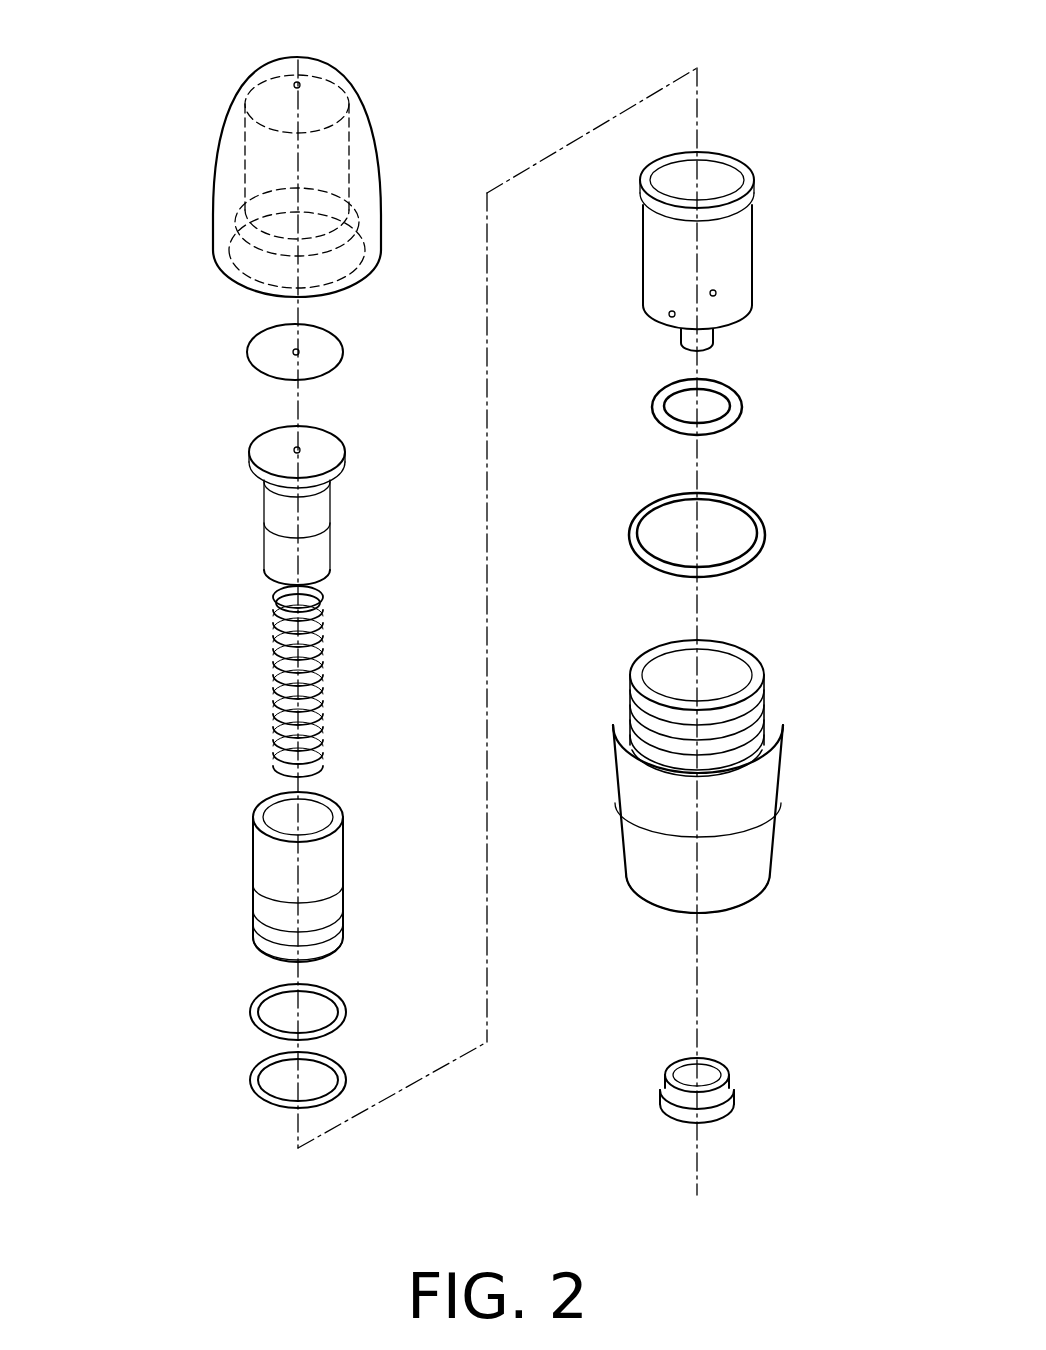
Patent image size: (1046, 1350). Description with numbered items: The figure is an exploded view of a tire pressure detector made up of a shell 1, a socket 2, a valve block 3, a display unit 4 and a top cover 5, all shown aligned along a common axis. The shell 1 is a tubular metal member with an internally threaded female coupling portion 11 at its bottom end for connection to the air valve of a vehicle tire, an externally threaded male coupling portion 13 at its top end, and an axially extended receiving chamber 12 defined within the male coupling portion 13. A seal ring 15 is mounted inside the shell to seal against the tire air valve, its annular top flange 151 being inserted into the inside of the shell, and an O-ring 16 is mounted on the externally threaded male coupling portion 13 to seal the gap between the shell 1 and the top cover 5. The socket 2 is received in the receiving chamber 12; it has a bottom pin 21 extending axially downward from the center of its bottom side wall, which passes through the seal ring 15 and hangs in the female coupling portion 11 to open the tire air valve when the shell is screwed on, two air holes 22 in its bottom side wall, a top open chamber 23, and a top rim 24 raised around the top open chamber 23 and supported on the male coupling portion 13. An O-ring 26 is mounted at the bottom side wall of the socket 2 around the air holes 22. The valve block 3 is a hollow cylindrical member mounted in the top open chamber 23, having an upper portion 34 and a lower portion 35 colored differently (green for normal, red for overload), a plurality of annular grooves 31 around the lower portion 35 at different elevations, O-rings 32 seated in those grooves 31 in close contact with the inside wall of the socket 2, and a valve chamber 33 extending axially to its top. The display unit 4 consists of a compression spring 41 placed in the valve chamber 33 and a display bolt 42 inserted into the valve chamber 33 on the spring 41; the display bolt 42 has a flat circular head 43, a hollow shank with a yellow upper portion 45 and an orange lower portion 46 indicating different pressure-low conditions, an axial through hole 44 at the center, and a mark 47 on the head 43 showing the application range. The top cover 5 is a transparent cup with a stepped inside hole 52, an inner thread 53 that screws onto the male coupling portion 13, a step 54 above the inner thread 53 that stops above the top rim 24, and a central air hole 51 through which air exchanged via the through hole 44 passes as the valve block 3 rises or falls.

The shell 1 is at (725, 800).
The internally threaded female coupling portion 11 is at (672, 913).
The axially extended receiving chamber 12 is at (722, 660).
The externally threaded male coupling portion 13 is at (740, 723).
The seal ring 15 is at (749, 1085).
The flange of nozzle 151 is at (710, 1095).
The O-ring 16 is at (735, 505).
The socket 2 is at (712, 242).
The bottom pin 21 is at (712, 340).
The air holes 22 is at (668, 315).
The top open chamber 23 is at (722, 165).
The top rim 24 is at (727, 212).
The O-ring 26 is at (735, 405).
The valve block 3 is at (295, 864).
The annular grooves 31 is at (318, 930).
The O-rings 32 is at (345, 1010).
The valve chamber 33 is at (312, 815).
The upper portion 34 is at (262, 858).
The lower portion 35 is at (262, 898).
The display unit 4 is at (292, 582).
The compression spring 41 is at (283, 700).
The display bolt 42 is at (332, 502).
The flat circular head 43 is at (335, 457).
The axial through hole 44 is at (300, 447).
The upper portion of hollow shank 45 is at (268, 507).
The lower portion of hollow shank 46 is at (325, 546).
The mark 47 is at (340, 352).
The top cover 5 is at (300, 164).
The air hole 51 is at (297, 82).
The stepped inside hole 52 is at (358, 122).
The inner thread 53 is at (240, 290).
The step 54 is at (348, 178).